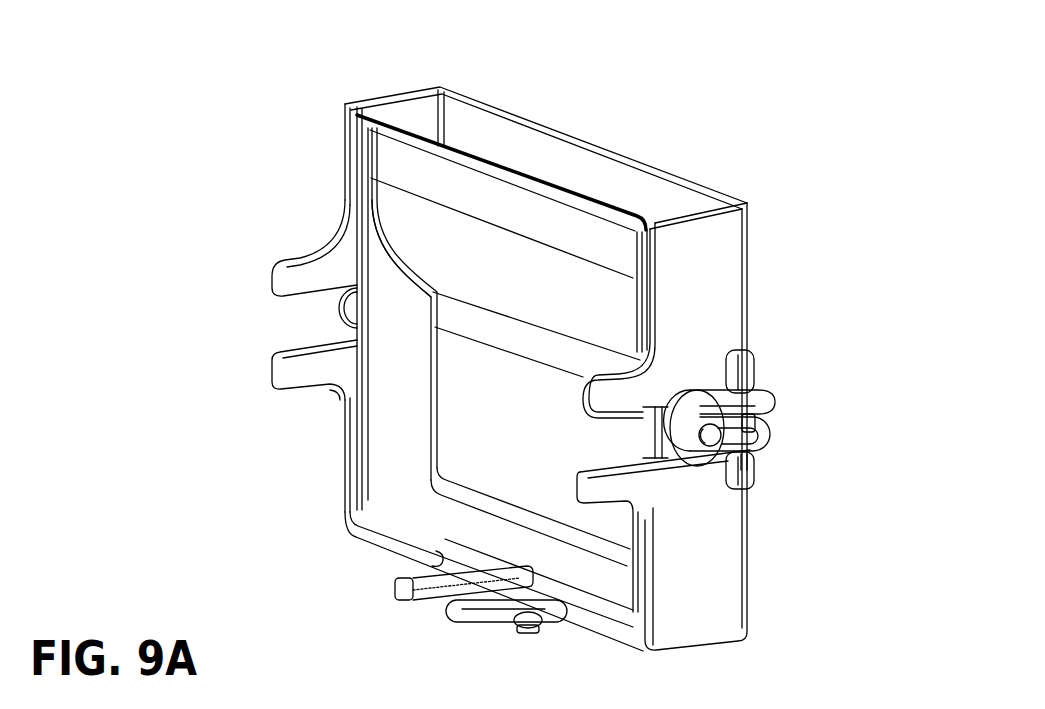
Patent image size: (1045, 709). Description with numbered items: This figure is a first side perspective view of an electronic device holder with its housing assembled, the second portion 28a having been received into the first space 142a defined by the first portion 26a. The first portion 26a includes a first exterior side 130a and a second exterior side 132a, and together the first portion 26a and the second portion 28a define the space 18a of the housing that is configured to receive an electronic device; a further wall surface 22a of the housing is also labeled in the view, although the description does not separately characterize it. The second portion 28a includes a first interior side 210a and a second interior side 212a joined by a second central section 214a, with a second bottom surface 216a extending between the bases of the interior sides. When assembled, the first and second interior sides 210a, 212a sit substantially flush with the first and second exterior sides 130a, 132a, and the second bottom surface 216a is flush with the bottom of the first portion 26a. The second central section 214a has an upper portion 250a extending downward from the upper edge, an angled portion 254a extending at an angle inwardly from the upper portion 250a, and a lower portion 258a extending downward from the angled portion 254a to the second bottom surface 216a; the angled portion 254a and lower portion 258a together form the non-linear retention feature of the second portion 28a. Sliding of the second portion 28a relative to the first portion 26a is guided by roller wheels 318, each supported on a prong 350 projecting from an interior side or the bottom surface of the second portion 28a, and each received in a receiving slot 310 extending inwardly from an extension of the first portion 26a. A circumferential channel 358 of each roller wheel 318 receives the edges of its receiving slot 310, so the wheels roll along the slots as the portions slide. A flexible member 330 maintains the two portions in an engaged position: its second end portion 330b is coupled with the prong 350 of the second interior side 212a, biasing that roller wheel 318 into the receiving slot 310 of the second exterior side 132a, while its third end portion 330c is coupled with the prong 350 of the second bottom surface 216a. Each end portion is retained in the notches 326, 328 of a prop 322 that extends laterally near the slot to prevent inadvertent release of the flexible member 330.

The first exterior side 130a is at (349, 100).
The first space 142a is at (418, 118).
The second central section 214a is at (506, 205).
The back wall 22a is at (587, 184).
The space 18a is at (645, 194).
The upper portion 250a is at (610, 247).
The first portion 26a is at (727, 230).
The second exterior side 132a is at (690, 258).
The second portion 28a is at (395, 162).
The angled portion 254a is at (430, 254).
The circumferential channel 358 is at (345, 283).
The receiving slot 310 is at (300, 322).
The roller wheel 318 is at (347, 330).
The second end portion 330b is at (762, 380).
The notch 326 is at (778, 404).
The flexible member 330 is at (768, 423).
The prong 350 is at (708, 438).
The notch 328 is at (756, 458).
The prop 322 is at (738, 468).
The first interior side 210a is at (383, 420).
The lower portion 258a is at (487, 463).
The second bottom surface 216a is at (405, 538).
The second interior side 212a is at (634, 549).
The third end portion 330c is at (525, 618).